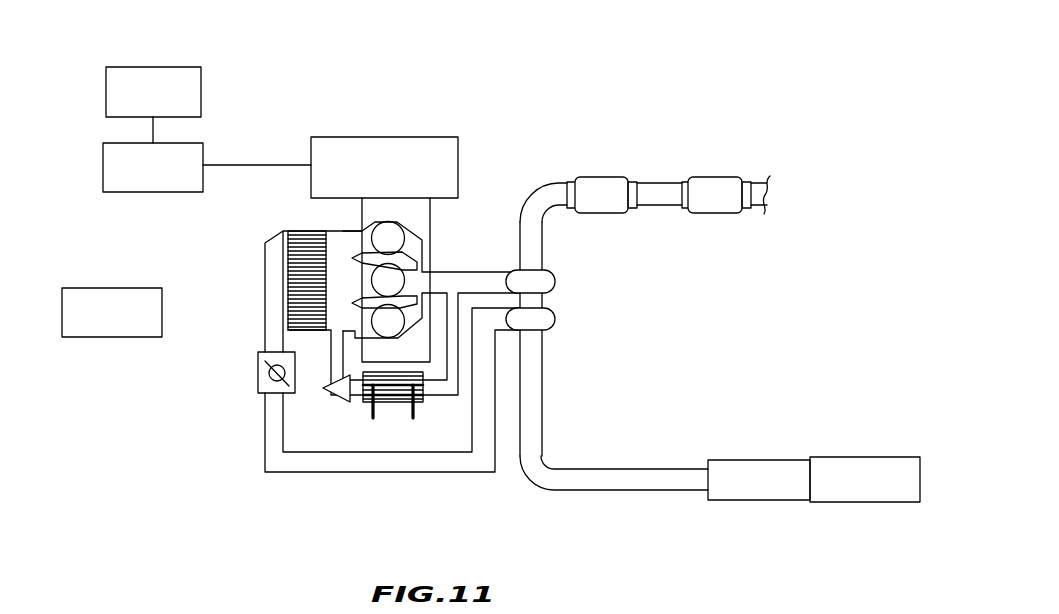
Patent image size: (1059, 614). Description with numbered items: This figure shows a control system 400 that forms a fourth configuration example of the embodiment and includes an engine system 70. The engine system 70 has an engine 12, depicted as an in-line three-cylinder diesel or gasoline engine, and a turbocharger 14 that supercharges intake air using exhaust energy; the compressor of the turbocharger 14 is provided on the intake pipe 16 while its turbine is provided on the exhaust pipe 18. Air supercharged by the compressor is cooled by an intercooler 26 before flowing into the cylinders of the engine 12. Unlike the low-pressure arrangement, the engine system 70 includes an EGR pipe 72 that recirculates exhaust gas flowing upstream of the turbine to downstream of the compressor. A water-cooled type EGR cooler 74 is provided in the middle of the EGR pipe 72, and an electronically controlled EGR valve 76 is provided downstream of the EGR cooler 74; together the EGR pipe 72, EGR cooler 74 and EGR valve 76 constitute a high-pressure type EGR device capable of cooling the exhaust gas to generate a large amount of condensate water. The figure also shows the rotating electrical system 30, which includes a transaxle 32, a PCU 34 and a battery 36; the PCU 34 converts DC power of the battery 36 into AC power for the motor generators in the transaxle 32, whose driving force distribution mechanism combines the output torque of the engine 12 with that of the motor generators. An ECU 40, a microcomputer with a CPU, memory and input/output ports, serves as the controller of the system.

The engine 12 is at (438, 270).
The turbocharger 14 is at (563, 300).
The intake pipe 16 is at (598, 470).
The exhaust pipe 18 is at (527, 206).
The intercooler 26 is at (283, 300).
The rotating electrical system 30 is at (264, 124).
The transaxle 32 is at (413, 137).
The PCU 34 is at (103, 160).
The battery 36 is at (106, 78).
The ECU 40 is at (62, 310).
The engine system 70 is at (206, 458).
The EGR pipe 72 is at (458, 395).
The EGR cooler 74 is at (395, 402).
The EGR valve 76 is at (333, 402).
The control system 400 is at (731, 102).